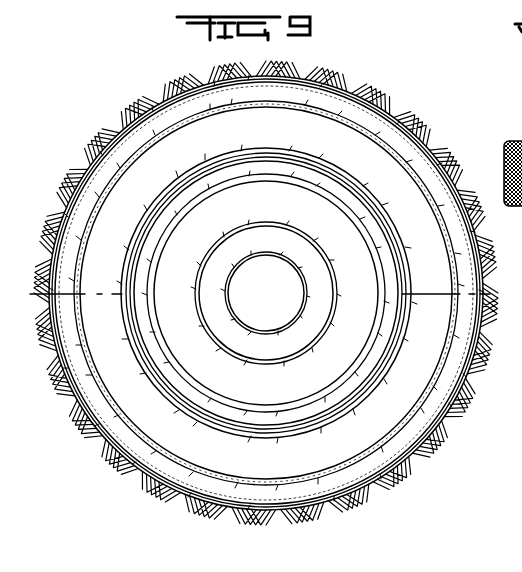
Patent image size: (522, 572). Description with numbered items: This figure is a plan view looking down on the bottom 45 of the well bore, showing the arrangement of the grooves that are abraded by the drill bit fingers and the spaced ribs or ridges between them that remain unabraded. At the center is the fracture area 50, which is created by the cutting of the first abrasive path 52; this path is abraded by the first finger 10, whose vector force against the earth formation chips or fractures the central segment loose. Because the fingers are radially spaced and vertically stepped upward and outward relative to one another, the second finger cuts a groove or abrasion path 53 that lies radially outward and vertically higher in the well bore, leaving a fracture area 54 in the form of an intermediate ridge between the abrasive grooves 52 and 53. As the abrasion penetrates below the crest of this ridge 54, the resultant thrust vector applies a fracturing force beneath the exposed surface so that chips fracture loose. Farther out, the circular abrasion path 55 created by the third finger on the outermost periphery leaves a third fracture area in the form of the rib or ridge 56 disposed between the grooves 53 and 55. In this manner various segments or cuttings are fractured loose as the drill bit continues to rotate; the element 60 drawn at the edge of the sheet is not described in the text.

The finger 10 is at (264, 285).
The bottom of the well bore 45 is at (172, 494).
The fracture area 50 is at (177, 352).
The abrasive path 52 is at (266, 293).
The abrasion path 53 is at (271, 428).
The fracture area 54 is at (266, 293).
The circular abrasion path 55 is at (231, 492).
The rib or ridge 56 is at (266, 293).
The hatched block 60 is at (511, 301).